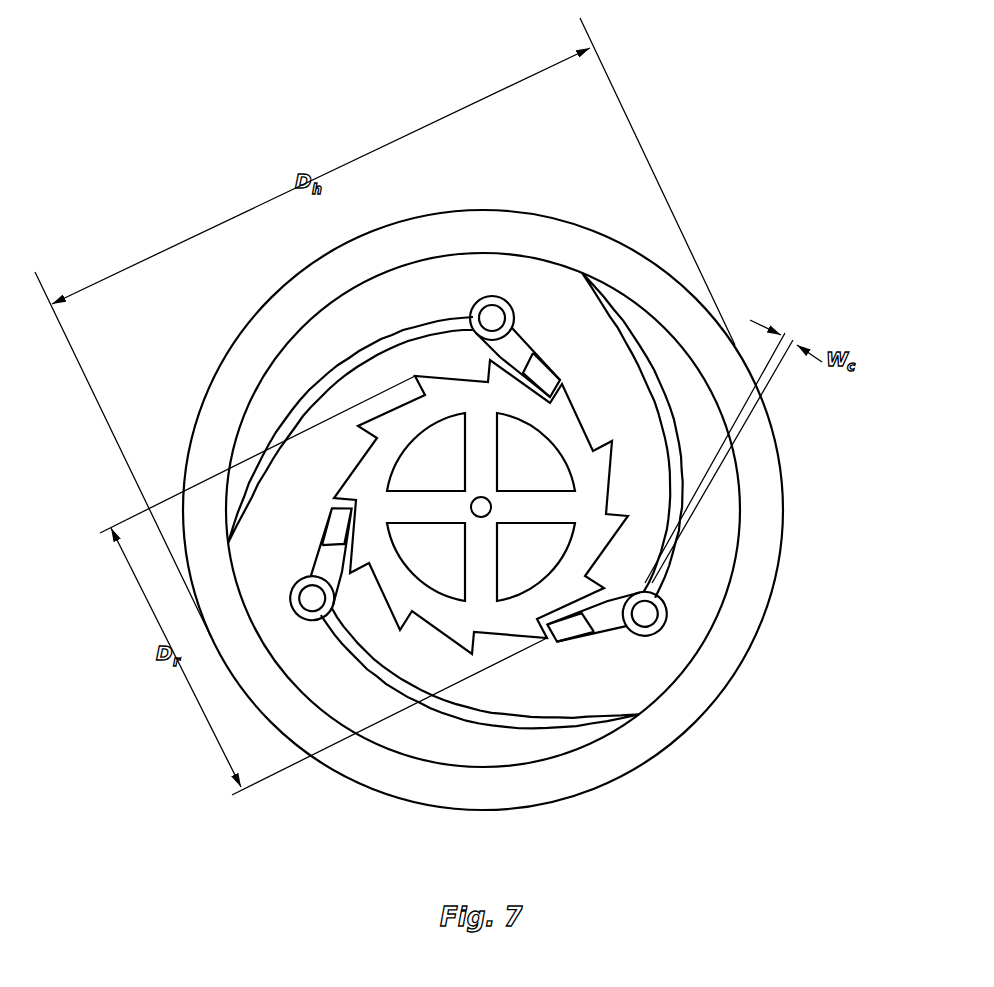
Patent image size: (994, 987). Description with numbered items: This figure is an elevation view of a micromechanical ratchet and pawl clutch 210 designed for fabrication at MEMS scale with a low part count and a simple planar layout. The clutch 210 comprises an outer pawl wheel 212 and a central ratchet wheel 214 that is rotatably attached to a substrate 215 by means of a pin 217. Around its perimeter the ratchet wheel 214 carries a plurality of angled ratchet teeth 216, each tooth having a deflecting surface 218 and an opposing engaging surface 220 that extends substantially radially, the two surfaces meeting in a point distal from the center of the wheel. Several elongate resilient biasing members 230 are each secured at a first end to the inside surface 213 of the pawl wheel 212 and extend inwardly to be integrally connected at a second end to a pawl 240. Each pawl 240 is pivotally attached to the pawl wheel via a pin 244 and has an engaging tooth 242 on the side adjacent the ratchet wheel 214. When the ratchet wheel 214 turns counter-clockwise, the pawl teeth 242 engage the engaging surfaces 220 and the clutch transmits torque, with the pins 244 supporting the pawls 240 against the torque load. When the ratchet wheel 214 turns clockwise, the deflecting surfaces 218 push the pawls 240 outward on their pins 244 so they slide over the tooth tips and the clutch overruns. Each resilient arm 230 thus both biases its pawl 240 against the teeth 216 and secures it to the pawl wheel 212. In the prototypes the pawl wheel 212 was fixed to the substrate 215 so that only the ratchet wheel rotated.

The micromechanical ratchet and pawl clutch 210 is at (691, 106).
The pawl wheel 212 is at (762, 508).
The inside surface 213 is at (706, 616).
The ratchet wheel 214 is at (539, 268).
The substrate 215 is at (872, 581).
The ratchet teeth 216 is at (562, 404).
The pin 217 is at (470, 507).
The deflecting surface 218 is at (652, 447).
The engaging surface 220 is at (600, 442).
The elongate resilient biasing member 230 is at (440, 704).
The pawl 240 is at (676, 706).
The engaging tooth 242 is at (555, 634).
The pin 244 is at (642, 613).